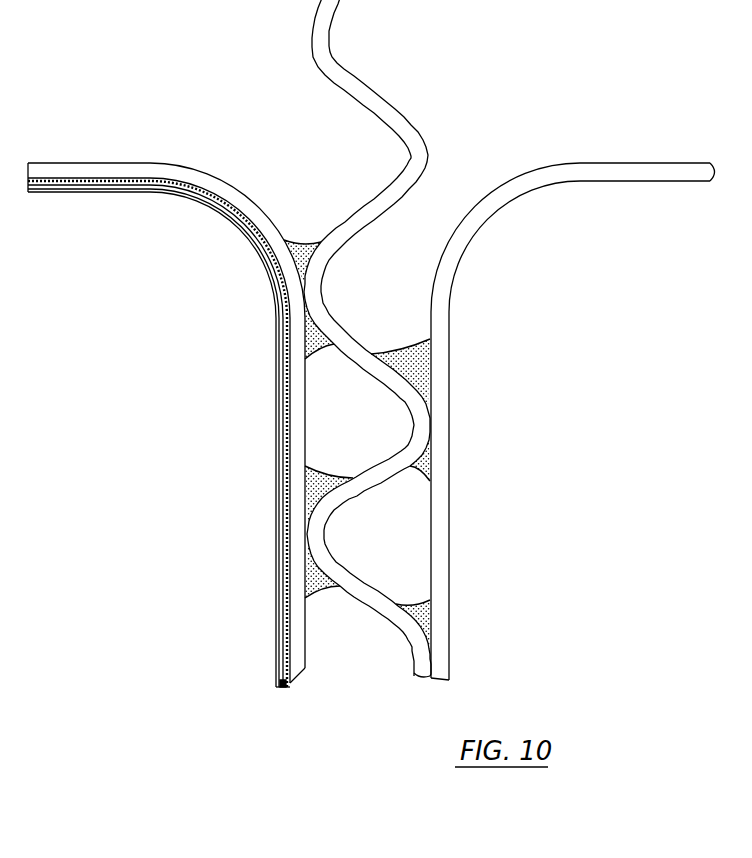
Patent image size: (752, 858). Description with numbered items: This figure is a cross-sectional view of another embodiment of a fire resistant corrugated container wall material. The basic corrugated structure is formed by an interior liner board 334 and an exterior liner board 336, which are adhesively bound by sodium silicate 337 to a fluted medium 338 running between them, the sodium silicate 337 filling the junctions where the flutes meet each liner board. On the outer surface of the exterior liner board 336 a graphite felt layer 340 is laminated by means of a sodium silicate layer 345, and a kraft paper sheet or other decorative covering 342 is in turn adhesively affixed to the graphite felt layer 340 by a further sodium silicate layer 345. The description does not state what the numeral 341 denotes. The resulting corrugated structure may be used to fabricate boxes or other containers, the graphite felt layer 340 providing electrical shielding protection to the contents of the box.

The interior liner board 334 is at (447, 297).
The exterior liner board 336 is at (298, 632).
The sodium silicate 337 is at (317, 341).
The fluted medium 338 is at (420, 403).
The graphite felt layer 340 is at (278, 687).
The intermediate layer 341 is at (280, 478).
The kraft paper sheet or other decorative covering 342 is at (277, 558).
The sodium silicate layer 345 is at (280, 600).